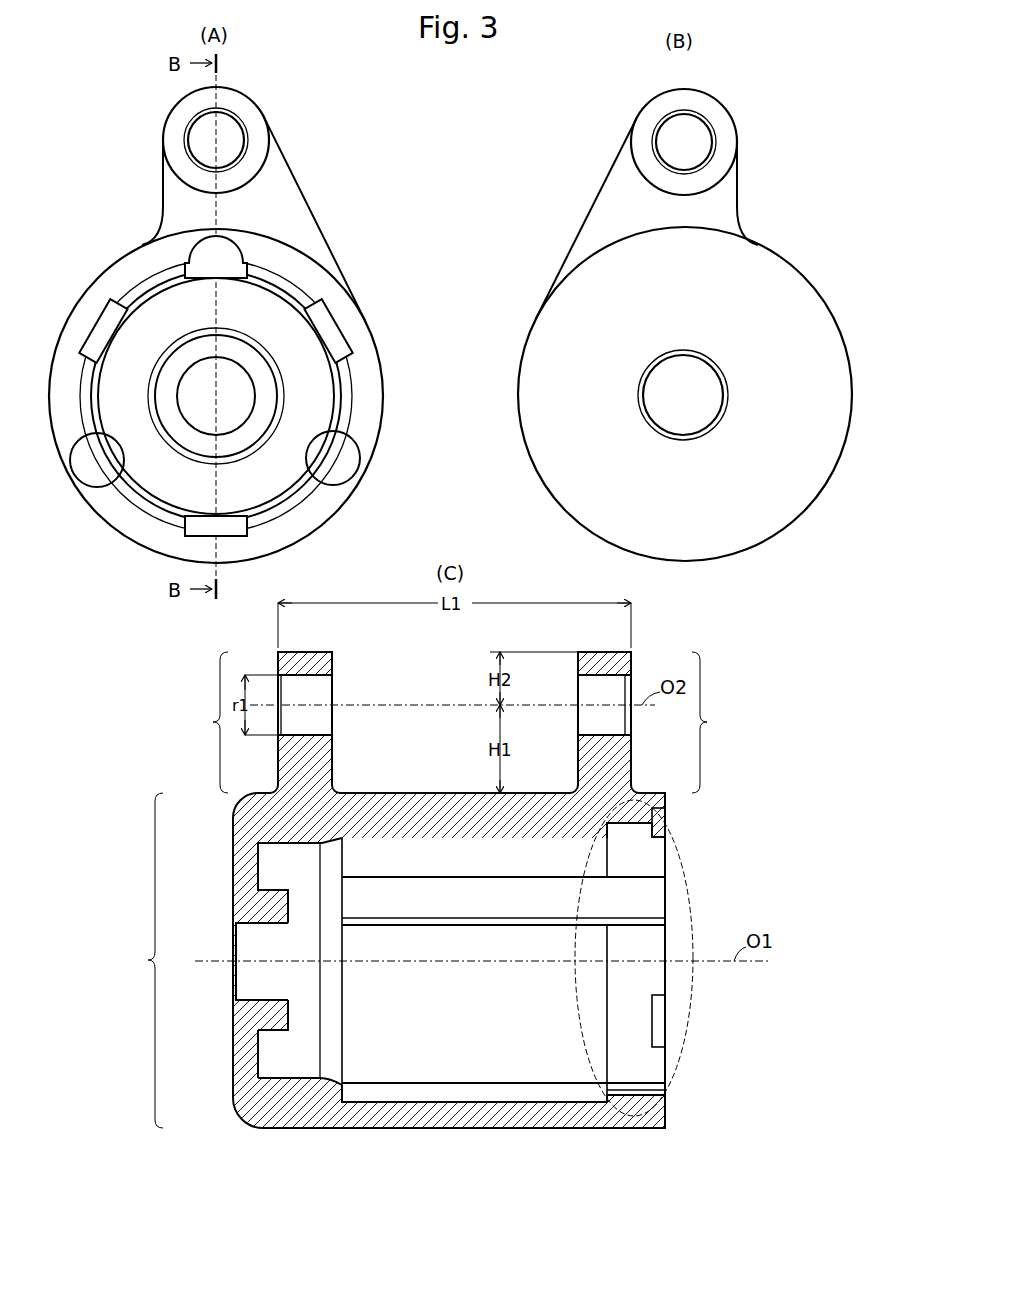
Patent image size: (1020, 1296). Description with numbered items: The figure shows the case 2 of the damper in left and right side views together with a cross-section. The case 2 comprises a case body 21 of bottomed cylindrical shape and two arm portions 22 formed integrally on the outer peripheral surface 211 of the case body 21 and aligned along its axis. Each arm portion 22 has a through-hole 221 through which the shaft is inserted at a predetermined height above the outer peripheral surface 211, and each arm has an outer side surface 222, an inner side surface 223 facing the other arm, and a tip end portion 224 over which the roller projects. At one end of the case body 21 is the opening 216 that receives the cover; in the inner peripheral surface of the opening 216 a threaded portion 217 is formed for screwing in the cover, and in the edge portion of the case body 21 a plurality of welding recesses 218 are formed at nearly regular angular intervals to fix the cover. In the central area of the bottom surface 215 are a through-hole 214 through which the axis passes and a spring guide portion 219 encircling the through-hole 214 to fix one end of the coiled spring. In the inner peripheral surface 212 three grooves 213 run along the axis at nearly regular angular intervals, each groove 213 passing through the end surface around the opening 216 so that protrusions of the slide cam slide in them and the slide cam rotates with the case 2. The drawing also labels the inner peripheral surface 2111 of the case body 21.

The case 2 is at (78, 58).
The case body 21 is at (444, 960).
The arm portions 22 is at (312, 198).
The outer peripheral surface 211 is at (356, 300).
The inner peripheral surface 212 is at (276, 1052).
The groove 213 is at (103, 326).
The through-hole 214 is at (206, 410).
The bottom surface 215 is at (310, 428).
The opening 216 is at (648, 958).
The threaded portion 217 is at (630, 830).
The welding recesses 218 is at (204, 254).
The spring guide portion 219 is at (284, 394).
The through-hole 221 is at (236, 132).
The outer side surface 222 is at (277, 762).
The inner side surface 223 is at (333, 763).
The tip end portion 224 is at (222, 88).
The inner peripheral surface of cylindrical portion 2111 is at (300, 500).